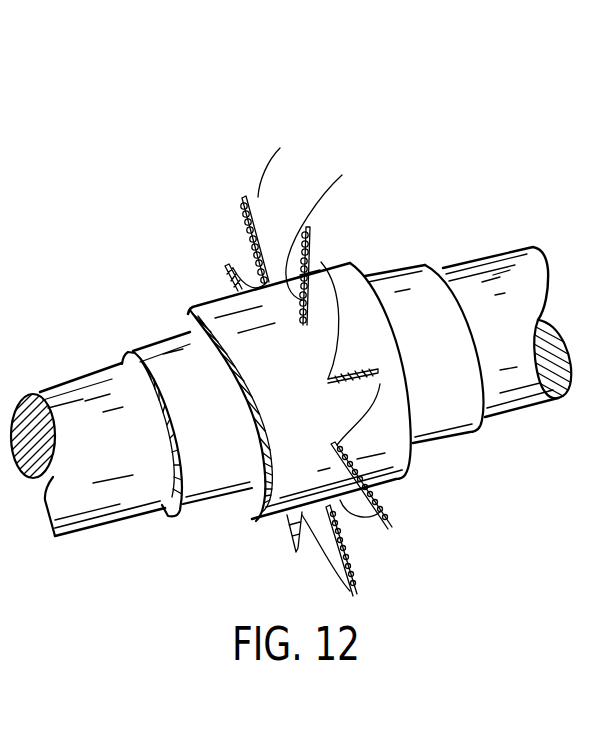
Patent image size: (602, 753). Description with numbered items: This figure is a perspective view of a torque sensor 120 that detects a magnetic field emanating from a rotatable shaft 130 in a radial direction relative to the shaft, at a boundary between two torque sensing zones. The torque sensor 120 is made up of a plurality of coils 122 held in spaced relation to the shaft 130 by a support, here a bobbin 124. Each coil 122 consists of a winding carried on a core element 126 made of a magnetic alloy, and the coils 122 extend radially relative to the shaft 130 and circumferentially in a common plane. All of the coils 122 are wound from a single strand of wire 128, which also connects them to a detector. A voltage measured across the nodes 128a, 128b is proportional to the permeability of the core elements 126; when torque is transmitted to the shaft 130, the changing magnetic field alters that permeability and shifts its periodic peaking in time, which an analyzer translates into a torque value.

The torque sensor 120 is at (97, 243).
The coils 122 is at (237, 240).
The bobbin 124 is at (352, 293).
The core element 126 is at (245, 197).
The single strand of wire 128 is at (254, 202).
The node 128a is at (287, 140).
The node 128b is at (350, 170).
The rotatable shaft 130 is at (510, 265).